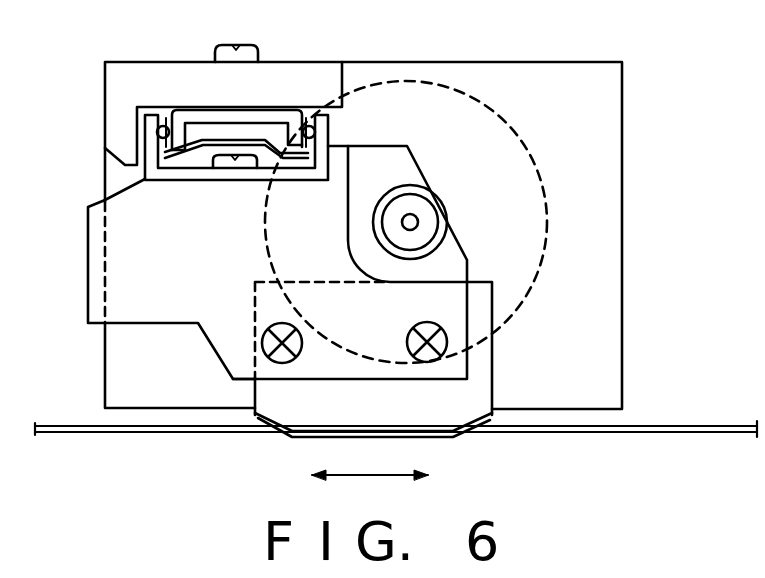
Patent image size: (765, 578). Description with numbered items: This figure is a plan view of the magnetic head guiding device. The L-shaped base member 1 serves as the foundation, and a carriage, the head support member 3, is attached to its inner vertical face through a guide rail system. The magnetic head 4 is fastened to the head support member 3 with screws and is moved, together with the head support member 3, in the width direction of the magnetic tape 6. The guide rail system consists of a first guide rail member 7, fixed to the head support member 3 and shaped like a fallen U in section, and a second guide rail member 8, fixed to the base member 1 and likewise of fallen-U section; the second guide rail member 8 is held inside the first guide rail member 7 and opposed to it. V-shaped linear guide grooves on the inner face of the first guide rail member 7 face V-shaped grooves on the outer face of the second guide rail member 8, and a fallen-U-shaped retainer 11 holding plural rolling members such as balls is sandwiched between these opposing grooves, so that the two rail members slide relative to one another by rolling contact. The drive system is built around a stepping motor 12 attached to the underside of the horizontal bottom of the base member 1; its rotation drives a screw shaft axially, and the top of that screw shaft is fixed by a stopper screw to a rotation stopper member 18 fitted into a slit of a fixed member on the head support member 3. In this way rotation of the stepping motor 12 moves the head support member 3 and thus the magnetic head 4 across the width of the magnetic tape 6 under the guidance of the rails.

The base member 1 is at (622, 285).
The head support member 3 is at (222, 358).
The magnetic head 4 is at (494, 366).
The magnetic tape 6 is at (672, 433).
The first guide rail member 7 is at (178, 180).
The second guide rail member 8 is at (305, 114).
The retainer 11 is at (307, 110).
The stepping motor 12 is at (548, 220).
The rotation stopper member 18 is at (423, 193).